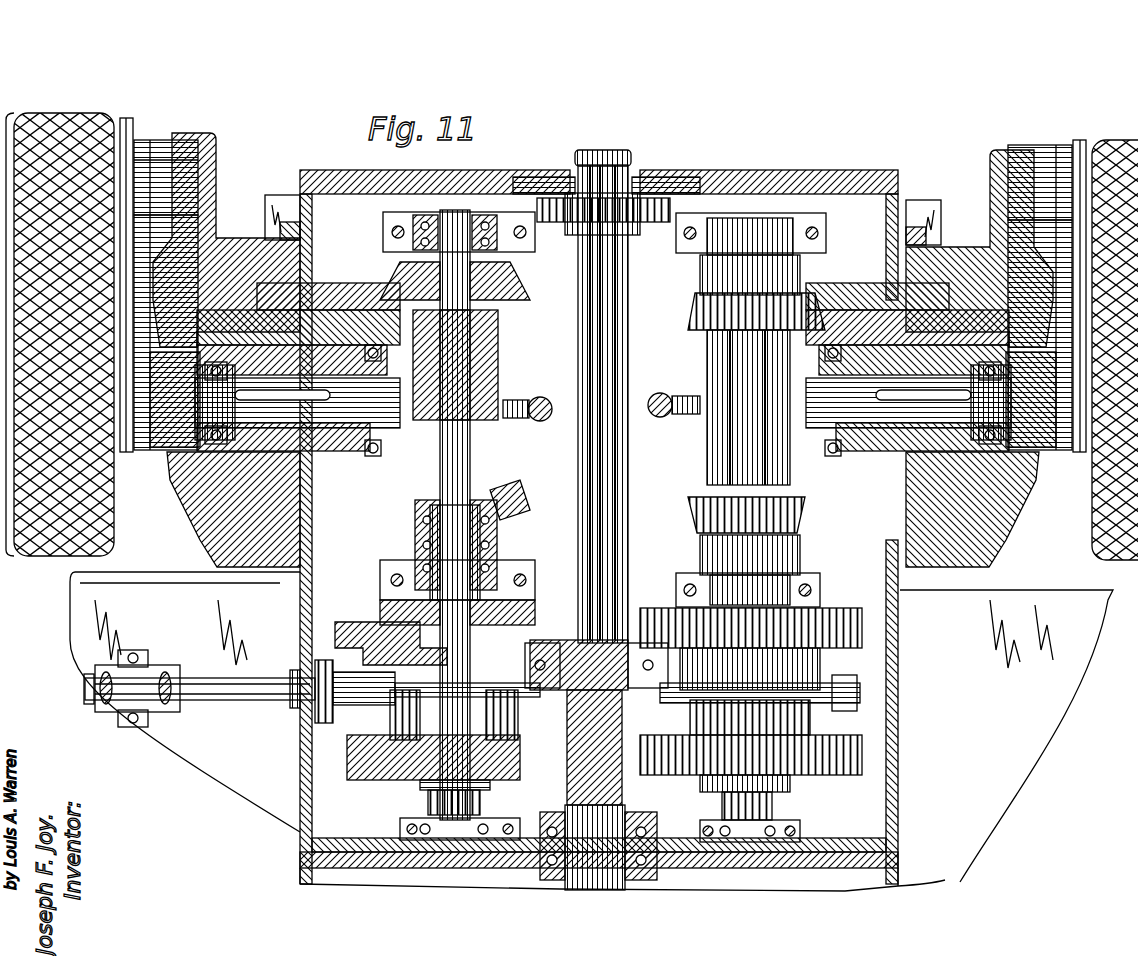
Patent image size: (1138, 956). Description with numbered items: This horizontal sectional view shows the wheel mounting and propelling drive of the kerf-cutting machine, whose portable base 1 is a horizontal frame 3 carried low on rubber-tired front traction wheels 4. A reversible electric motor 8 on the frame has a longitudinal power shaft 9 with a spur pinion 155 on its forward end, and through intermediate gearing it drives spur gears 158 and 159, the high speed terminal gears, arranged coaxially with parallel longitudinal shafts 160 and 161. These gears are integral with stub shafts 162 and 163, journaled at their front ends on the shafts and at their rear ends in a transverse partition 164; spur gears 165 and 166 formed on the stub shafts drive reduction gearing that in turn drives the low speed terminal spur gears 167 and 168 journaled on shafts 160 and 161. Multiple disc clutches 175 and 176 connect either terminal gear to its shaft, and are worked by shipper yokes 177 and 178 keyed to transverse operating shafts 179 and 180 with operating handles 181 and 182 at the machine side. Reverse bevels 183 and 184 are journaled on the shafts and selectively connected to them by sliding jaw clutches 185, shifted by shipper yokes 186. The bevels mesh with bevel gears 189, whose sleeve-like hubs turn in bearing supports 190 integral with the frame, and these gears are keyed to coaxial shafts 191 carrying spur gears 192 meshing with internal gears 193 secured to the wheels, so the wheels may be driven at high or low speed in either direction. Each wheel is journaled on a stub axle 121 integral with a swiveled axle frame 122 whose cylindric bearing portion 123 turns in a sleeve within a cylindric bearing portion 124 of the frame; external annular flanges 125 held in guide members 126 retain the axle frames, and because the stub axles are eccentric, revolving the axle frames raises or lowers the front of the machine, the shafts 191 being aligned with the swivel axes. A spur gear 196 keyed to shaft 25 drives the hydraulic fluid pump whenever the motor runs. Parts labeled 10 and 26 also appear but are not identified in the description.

The portable base 1 is at (297, 828).
The horizontal frame 3 is at (912, 832).
The front traction wheels 4 is at (28, 556).
The motor 8 is at (945, 880).
The power shaft 9 is at (548, 835).
The housing 10 is at (786, 178).
The shaft 25 is at (628, 272).
The bearing hub 26 is at (562, 760).
The stub axles 121 is at (133, 200).
The swiveled axle frame 122 is at (236, 240).
The cylindric bearing portion 123 is at (316, 505).
The cylindric bearing portion 124 is at (345, 283).
The external annular flanges 125 is at (292, 222).
The guide members 126 is at (275, 195).
The spur pinion 155 is at (645, 660).
The spur gear 158 is at (350, 745).
The spur gear 159 is at (840, 775).
The shaft 160 is at (497, 532).
The shaft 161 is at (822, 600).
The stub shaft 162 is at (420, 780).
The stub shaft 163 is at (770, 792).
The transverse partition 164 is at (400, 830).
The spur gear 165 is at (428, 803).
The spur gear 166 is at (722, 806).
The spur gear 167 is at (342, 645).
The spur gear 168 is at (700, 588).
The multiple disc clutch 175 is at (382, 612).
The multiple disc clutch 176 is at (390, 712).
The shipper yoke 177 is at (297, 676).
The shipper yoke 178 is at (858, 700).
The transverse operating shaft 179 is at (262, 702).
The transverse operating shaft 180 is at (690, 736).
The operating handle 181 is at (166, 672).
The operating handle 182 is at (108, 672).
The reverse bevel 183 is at (500, 503).
The reverse bevel 184 is at (498, 292).
The sliding jaw clutch 185 is at (498, 338).
The shipper yoke 186 is at (508, 422).
The bevel gear 189 is at (340, 345).
The bearing support 190 is at (215, 470).
The coaxial shaft 191 is at (318, 392).
The spur gear 192 is at (168, 452).
The internal gear 193 is at (171, 168).
The spur gear 196 is at (672, 198).